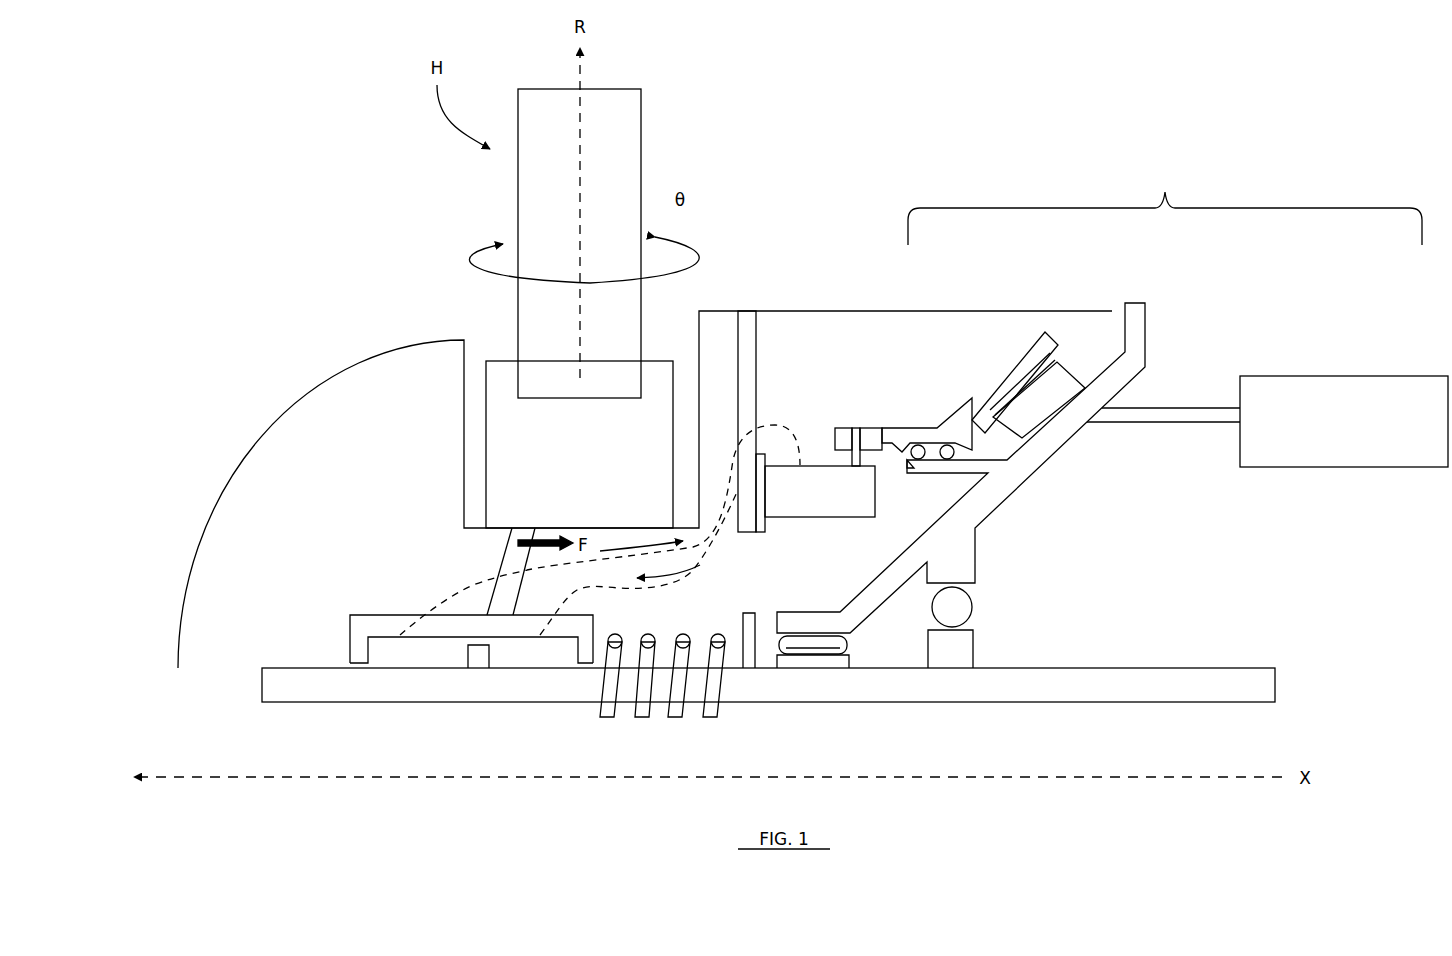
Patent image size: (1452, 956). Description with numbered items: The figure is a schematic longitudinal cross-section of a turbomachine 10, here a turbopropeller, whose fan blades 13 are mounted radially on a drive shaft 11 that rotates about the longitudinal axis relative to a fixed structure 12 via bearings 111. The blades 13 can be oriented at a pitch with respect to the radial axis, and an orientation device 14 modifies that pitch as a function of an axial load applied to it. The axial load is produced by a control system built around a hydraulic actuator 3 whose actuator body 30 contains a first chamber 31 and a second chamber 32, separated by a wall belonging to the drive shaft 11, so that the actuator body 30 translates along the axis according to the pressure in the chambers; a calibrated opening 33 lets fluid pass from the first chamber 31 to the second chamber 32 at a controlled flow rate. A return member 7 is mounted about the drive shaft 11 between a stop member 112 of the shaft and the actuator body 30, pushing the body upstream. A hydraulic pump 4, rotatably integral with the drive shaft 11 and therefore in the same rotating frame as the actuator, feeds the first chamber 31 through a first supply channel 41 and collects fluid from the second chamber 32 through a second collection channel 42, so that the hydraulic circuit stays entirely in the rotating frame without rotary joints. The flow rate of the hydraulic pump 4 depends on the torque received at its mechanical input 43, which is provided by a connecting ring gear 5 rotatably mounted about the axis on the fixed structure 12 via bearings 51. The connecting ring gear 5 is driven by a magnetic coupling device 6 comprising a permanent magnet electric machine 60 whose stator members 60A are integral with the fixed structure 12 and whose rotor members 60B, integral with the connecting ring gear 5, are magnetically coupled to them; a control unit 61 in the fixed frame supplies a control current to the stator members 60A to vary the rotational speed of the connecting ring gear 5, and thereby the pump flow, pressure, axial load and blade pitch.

The turbomachine 10 is at (246, 253).
The blades 13 is at (550, 167).
The orientation device 14 is at (548, 428).
The actuator body 30 is at (513, 563).
The hydraulic actuator 3 is at (320, 630).
The first chamber 31 is at (535, 653).
The second chamber 32 is at (442, 657).
The calibrated opening 33 is at (477, 649).
The drive shaft 11 is at (423, 702).
The stop member 112 is at (760, 628).
The return member 7 is at (660, 739).
The fixed structure 12 is at (1040, 468).
The bearings 111 is at (972, 607).
The hydraulic pump 4 is at (812, 500).
The mechanical input 43 is at (868, 448).
The connecting ring gear 5 is at (905, 428).
The bearings 51 is at (903, 468).
The stator members 60A is at (1030, 410).
The rotor members 60B is at (1037, 357).
The permanent magnet electric machine 60 is at (1084, 360).
The control unit 61 is at (1267, 421).
The magnetic coupling device 6 is at (1165, 202).
The first supply channel 41 is at (688, 583).
The second collection channel 42 is at (438, 598).